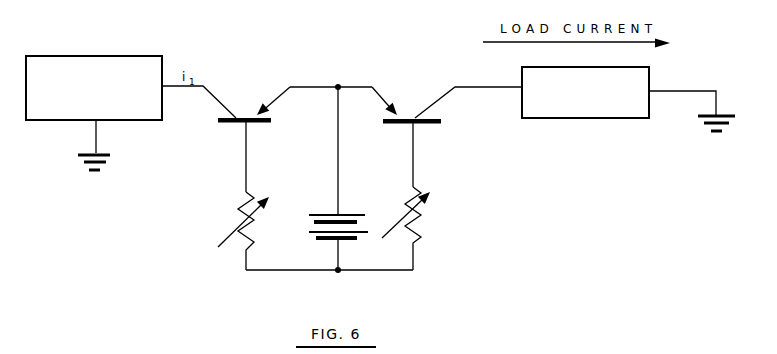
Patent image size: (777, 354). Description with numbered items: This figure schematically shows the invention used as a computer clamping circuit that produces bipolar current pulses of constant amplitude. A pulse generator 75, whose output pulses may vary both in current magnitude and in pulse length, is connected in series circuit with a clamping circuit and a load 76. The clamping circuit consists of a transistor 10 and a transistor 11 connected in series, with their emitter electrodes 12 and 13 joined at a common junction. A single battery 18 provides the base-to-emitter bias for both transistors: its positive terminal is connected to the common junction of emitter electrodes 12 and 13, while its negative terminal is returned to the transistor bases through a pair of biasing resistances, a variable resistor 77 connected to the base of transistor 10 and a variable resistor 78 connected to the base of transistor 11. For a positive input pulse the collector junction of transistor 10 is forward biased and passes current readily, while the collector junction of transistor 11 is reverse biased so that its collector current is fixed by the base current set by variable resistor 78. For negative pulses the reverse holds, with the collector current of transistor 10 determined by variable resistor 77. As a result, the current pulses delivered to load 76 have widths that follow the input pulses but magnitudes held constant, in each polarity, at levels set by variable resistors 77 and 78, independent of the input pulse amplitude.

The pulse generator 75 is at (100, 56).
The transistor 10 is at (236, 111).
The transistor 11 is at (408, 109).
The emitter electrode 12 is at (267, 104).
The emitter electrode 13 is at (388, 104).
The battery 18 is at (343, 214).
The load 76 is at (568, 119).
The variable resistor 77 is at (231, 232).
The variable resistor 78 is at (416, 208).